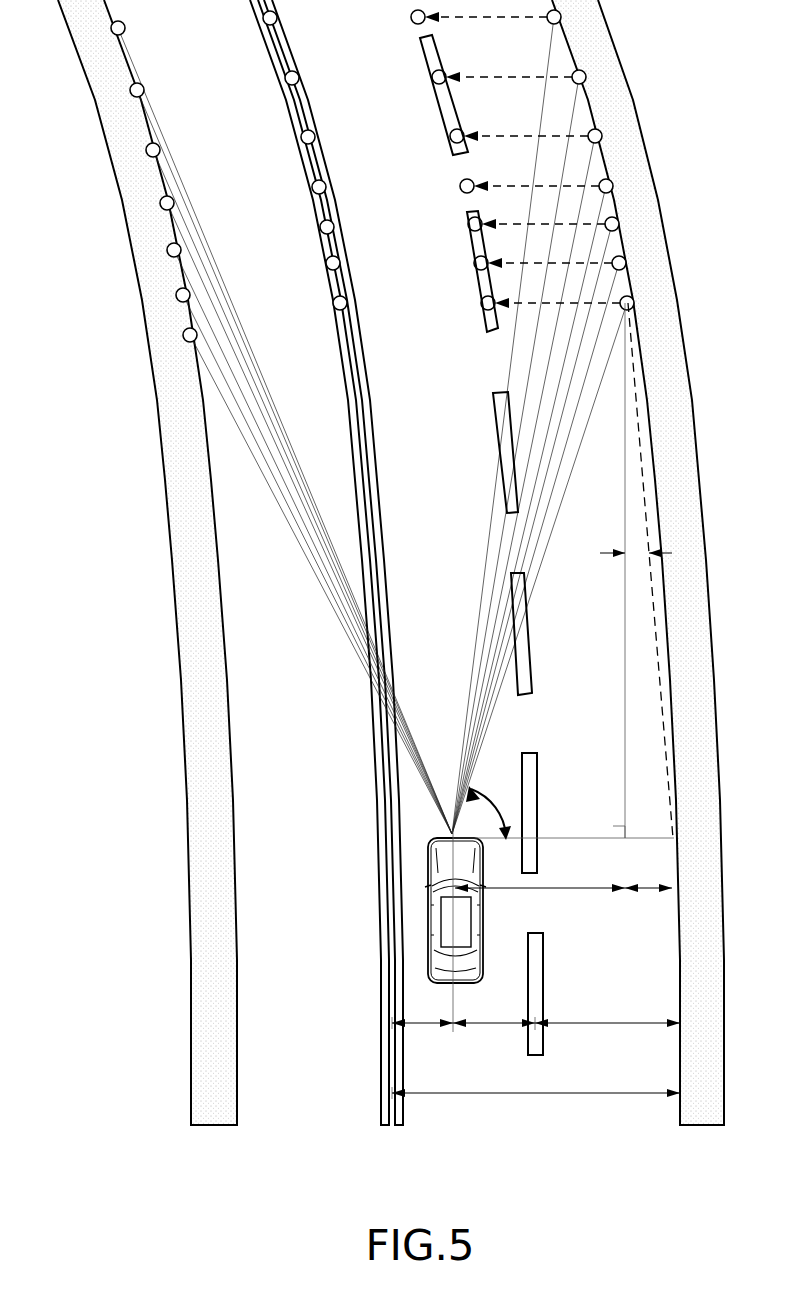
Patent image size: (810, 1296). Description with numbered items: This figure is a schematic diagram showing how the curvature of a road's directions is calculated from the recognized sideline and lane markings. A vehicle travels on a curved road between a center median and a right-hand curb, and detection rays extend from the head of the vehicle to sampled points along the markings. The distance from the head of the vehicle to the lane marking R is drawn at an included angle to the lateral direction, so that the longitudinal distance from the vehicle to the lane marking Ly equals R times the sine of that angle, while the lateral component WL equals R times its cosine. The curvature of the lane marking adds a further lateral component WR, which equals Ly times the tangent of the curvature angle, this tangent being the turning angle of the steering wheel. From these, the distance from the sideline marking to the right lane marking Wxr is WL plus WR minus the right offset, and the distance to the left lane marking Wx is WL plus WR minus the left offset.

The distance from head of vehicle to lane marking R is at (492, 545).
The longitudinal distance from vehicle to lane marking Ly is at (609, 570).
The lateral distance component WL is at (540, 876).
The lateral distance component due to curvature WR is at (650, 876).
The distance from sideline marking to right lane marking Wxr is at (607, 1008).
The distance from sideline marking to left lane marking Wx is at (536, 1080).